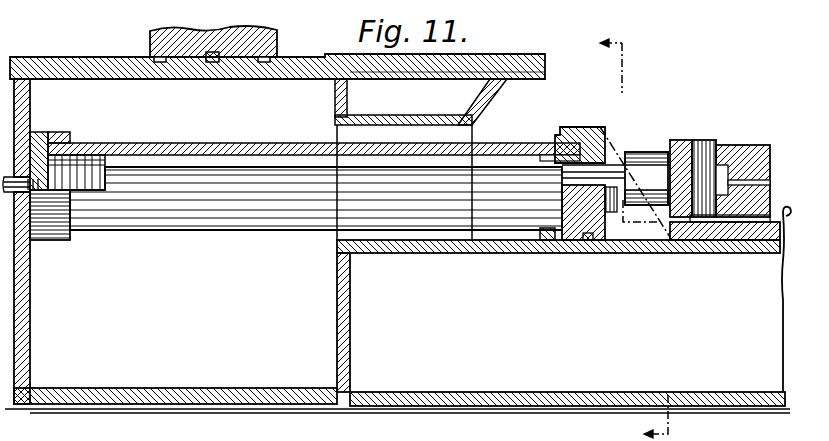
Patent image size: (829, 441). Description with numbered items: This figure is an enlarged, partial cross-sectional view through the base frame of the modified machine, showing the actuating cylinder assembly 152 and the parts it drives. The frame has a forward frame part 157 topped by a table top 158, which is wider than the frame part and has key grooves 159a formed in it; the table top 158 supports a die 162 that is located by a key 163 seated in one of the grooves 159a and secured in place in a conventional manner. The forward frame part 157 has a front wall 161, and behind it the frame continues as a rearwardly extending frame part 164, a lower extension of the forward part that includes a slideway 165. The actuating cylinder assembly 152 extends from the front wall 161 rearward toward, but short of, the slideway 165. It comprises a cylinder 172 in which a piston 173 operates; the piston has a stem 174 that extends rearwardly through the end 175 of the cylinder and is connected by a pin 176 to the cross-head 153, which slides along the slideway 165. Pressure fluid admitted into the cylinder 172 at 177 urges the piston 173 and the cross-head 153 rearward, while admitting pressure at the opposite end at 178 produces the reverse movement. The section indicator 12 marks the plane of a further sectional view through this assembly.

The section line 12- 12 is at (646, 239).
The actuating cylinder assembly 152 is at (252, 238).
The cross-head 153 is at (757, 150).
The forward frame part 157 is at (146, 402).
The table top 158 is at (113, 57).
The key grooves 159a is at (158, 62).
The front wall 161 is at (30, 320).
The die 162 is at (278, 40).
The key 163 is at (216, 62).
The rearwardly extending frame part 164 is at (592, 405).
The slideway 165 is at (766, 250).
The cylinder 172 is at (292, 140).
The piston 173 is at (115, 143).
The stem 174 is at (455, 167).
The end of the cylinder 175 is at (597, 134).
The pin 176 is at (705, 147).
The pressure fluid inlet 177 is at (8, 196).
The pressure fluid inlet 178 is at (549, 242).